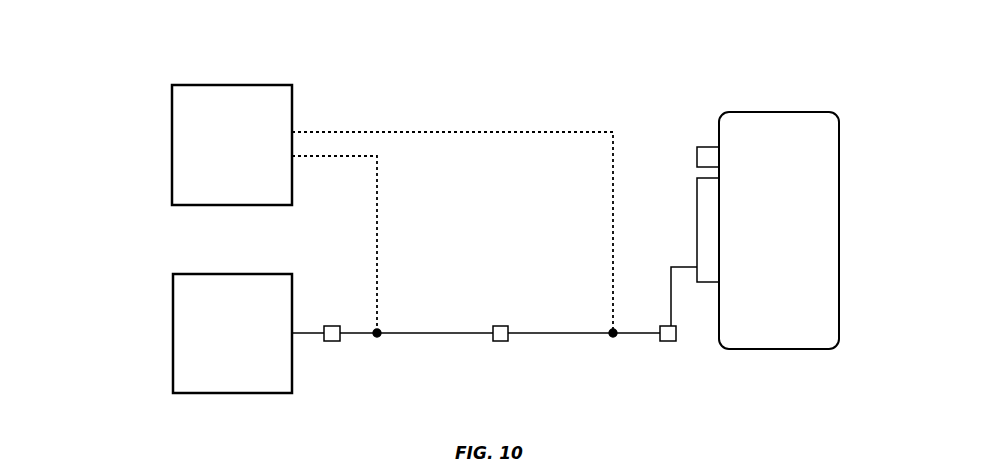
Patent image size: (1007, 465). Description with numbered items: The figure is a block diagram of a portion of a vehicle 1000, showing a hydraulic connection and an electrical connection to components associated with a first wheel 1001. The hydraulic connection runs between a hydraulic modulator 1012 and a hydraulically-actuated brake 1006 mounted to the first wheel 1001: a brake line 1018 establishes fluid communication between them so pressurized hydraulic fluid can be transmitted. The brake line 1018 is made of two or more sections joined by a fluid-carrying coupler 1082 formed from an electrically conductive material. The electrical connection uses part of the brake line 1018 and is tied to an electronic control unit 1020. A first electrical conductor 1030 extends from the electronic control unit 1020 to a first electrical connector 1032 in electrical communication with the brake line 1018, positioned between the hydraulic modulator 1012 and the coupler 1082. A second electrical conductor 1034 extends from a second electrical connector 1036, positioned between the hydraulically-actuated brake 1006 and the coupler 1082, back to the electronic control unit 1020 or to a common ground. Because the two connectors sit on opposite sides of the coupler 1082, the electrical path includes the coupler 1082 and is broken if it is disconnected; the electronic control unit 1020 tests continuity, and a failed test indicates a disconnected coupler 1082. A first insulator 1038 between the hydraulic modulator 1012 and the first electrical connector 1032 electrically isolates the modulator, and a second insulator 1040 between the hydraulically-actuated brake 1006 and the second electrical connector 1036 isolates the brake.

The vehicle 1000 is at (178, 66).
The first wheel 1001 is at (800, 111).
The hydraulically-actuated brake 1006 is at (697, 207).
The hydraulic modulator 1012 is at (232, 333).
The brake line 1018 is at (392, 333).
The electronic control unit 1020 is at (232, 145).
The first electrical conductor 1030 is at (378, 180).
The first electrical connector 1032 is at (379, 338).
The second electrical conductor 1034 is at (589, 128).
The second electrical connector 1036 is at (614, 338).
The first insulator 1038 is at (334, 342).
The second insulator 1040 is at (670, 342).
The coupler 1082 is at (500, 342).